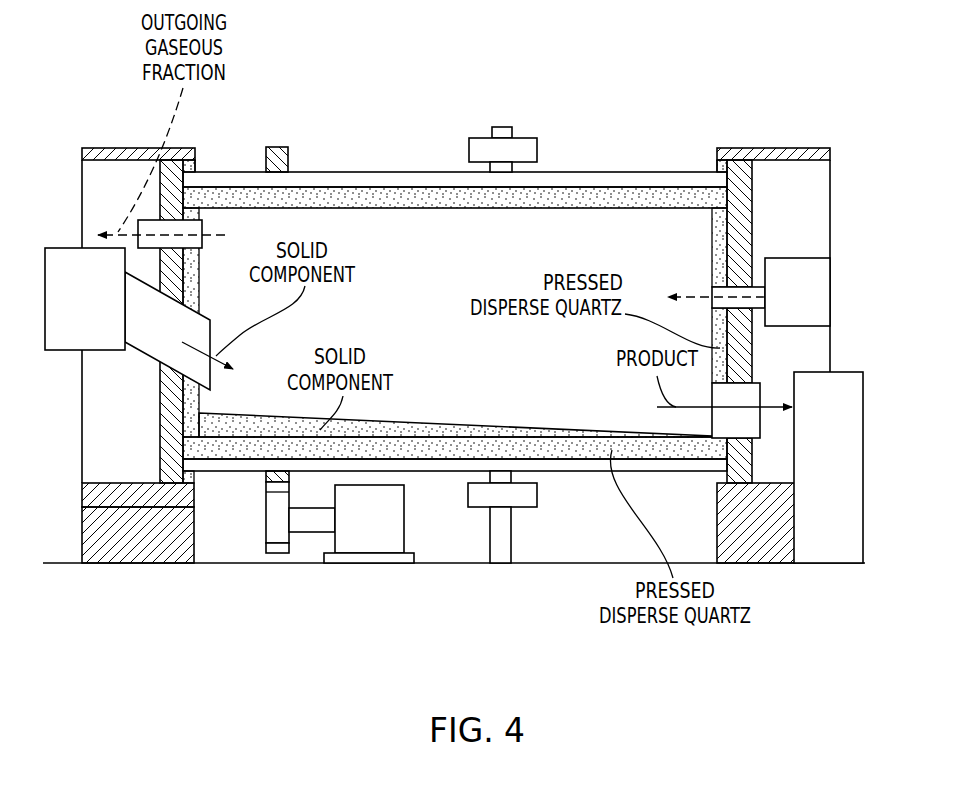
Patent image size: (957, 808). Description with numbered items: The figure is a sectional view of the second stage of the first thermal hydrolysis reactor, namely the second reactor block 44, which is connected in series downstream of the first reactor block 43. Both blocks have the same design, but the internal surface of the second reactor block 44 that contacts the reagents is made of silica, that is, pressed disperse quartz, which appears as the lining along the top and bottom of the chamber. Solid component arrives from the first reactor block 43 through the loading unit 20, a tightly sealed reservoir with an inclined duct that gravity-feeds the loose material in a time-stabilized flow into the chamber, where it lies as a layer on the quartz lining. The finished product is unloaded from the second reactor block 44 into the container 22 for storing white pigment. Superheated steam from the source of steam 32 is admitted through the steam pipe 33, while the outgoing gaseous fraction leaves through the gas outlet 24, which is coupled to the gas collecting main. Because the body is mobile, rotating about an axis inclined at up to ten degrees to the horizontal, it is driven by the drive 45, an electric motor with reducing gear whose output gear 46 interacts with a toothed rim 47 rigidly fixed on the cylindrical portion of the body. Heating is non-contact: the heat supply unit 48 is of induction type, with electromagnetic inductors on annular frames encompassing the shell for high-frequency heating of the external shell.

The loading unit 20 is at (179, 331).
The container for storing white pigment 22 is at (760, 467).
The gas outlet 24 is at (170, 228).
The source of steam 32 is at (797, 292).
The steam pipe 33 is at (722, 292).
The first reactor block 43 is at (85, 299).
The second reactor block 44 is at (433, 220).
The drive 45 is at (351, 524).
The output gear 46 is at (280, 546).
The toothed rim 47 is at (284, 166).
The heat supply unit 48 is at (482, 138).